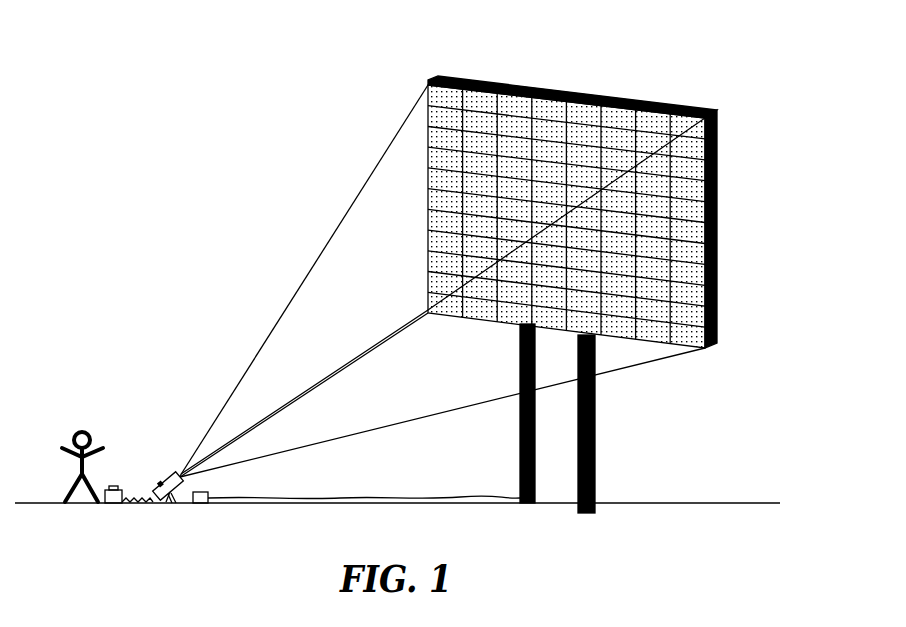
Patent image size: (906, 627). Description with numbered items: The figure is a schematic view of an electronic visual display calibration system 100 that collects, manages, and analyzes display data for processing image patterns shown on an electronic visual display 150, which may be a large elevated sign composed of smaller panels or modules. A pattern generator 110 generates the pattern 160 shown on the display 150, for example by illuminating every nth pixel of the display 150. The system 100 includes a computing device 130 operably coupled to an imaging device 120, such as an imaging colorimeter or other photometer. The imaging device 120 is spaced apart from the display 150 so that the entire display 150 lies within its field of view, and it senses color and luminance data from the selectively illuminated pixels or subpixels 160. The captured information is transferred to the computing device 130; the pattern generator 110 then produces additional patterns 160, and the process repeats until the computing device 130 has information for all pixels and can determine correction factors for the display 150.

The electronic visual display calibration system 100 is at (143, 412).
The pattern generator 110 is at (199, 504).
The imaging device 120 is at (164, 484).
The computing device 130 is at (116, 486).
The electronic visual display 150 is at (717, 181).
The pattern 160 is at (513, 145).